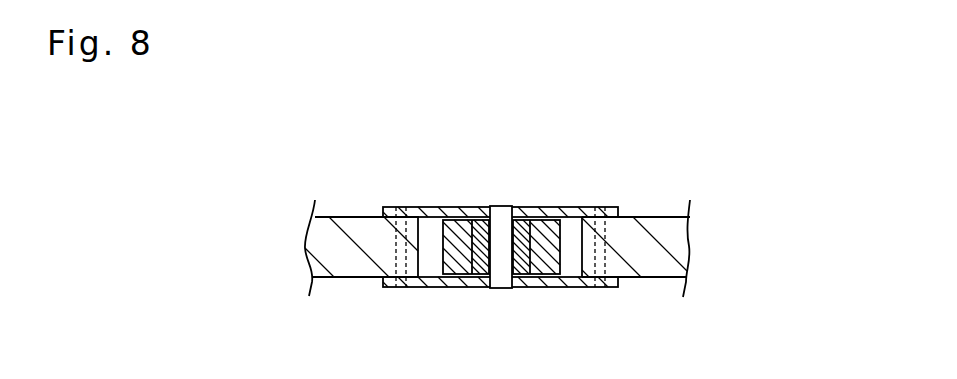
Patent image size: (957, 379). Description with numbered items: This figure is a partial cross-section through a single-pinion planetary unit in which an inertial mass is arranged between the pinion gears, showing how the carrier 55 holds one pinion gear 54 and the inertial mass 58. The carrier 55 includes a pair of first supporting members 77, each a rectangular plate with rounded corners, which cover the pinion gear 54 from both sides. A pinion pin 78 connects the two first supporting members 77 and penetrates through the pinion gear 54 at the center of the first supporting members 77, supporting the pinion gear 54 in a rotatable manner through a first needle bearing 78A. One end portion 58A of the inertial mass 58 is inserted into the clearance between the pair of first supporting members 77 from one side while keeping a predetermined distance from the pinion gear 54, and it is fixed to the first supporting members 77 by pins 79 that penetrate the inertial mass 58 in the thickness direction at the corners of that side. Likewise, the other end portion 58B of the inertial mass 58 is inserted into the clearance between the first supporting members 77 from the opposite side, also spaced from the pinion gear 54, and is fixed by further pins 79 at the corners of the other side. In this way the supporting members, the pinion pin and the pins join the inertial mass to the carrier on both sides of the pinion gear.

The carrier 55 is at (514, 232).
The inertial mass 58 is at (495, 254).
The end portion of the inertial mass 58A is at (637, 237).
The other end portion of the inertial mass 58B is at (340, 258).
The first supporting member 77 is at (563, 207).
The pinion pin 78 is at (500, 207).
The first needle bearing 78A is at (480, 267).
The pinion gear 54 is at (543, 263).
The pin 79 is at (398, 289).